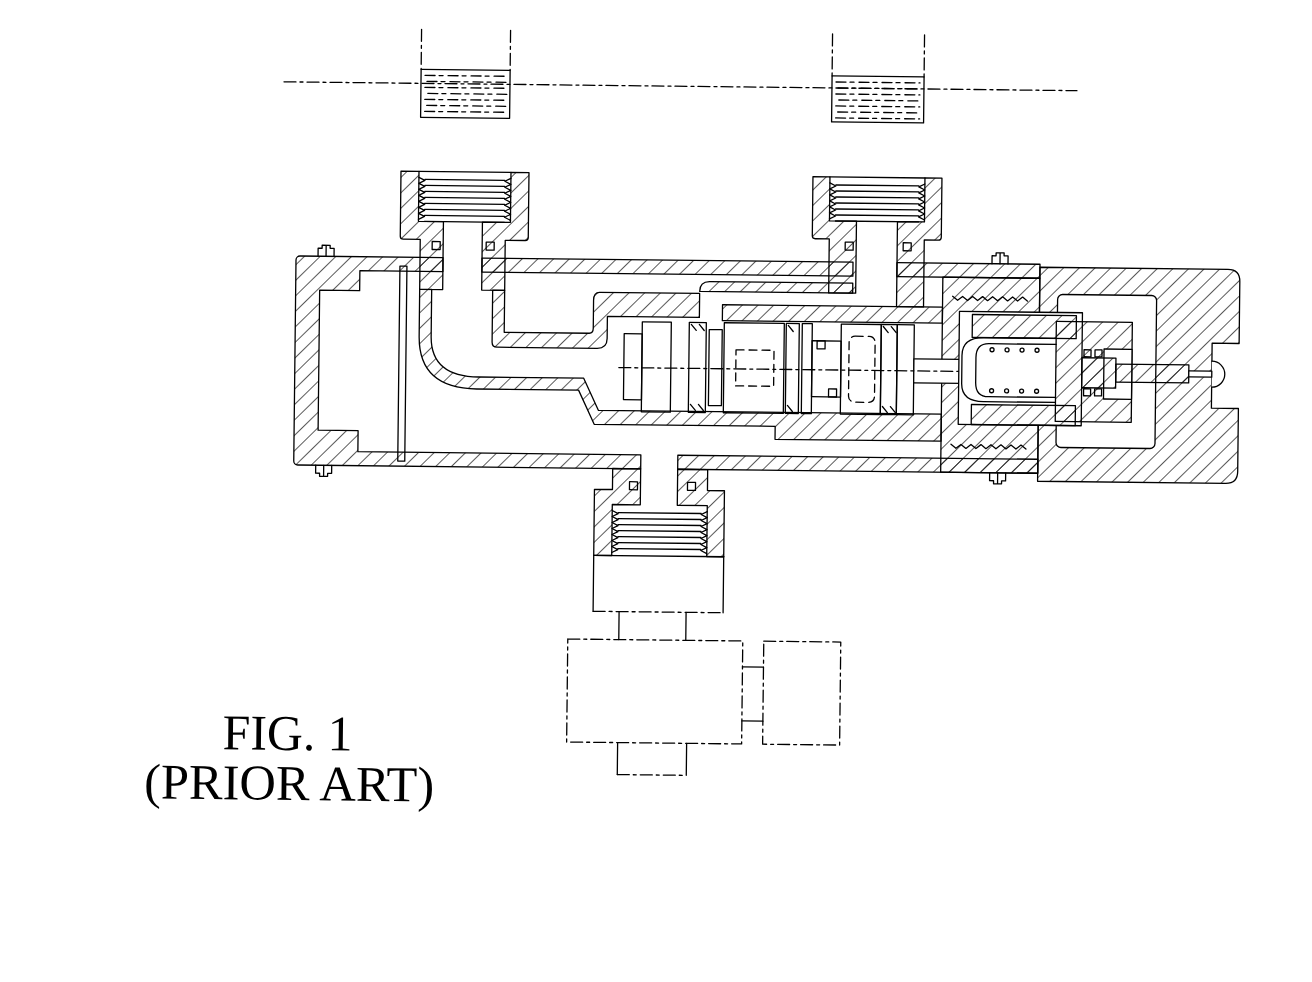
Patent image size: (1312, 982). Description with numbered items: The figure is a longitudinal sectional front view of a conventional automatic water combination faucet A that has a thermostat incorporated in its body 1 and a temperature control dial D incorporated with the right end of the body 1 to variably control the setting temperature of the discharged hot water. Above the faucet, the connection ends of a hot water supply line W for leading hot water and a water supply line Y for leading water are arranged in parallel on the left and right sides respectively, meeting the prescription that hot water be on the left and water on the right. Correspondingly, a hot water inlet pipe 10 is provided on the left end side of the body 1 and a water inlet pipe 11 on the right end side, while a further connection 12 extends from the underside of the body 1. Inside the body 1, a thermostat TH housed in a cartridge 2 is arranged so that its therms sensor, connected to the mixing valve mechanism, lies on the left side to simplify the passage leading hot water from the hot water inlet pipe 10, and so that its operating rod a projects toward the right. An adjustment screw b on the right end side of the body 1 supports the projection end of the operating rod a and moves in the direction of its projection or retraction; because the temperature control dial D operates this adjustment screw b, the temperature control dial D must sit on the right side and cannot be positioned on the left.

The body 1 is at (651, 247).
The cartridge 2 is at (777, 407).
The hot water inlet pipe 10 is at (512, 250).
The water inlet pipe 11 is at (927, 250).
The third port 12 is at (612, 470).
The thermostat TH is at (765, 386).
The temperature control dial D is at (1118, 258).
The automatic water combination faucet A is at (1252, 228).
The operating rod a is at (963, 366).
The adjustment screw b is at (1007, 407).
The hot water supply line W is at (508, 68).
The water supply line Y is at (922, 71).